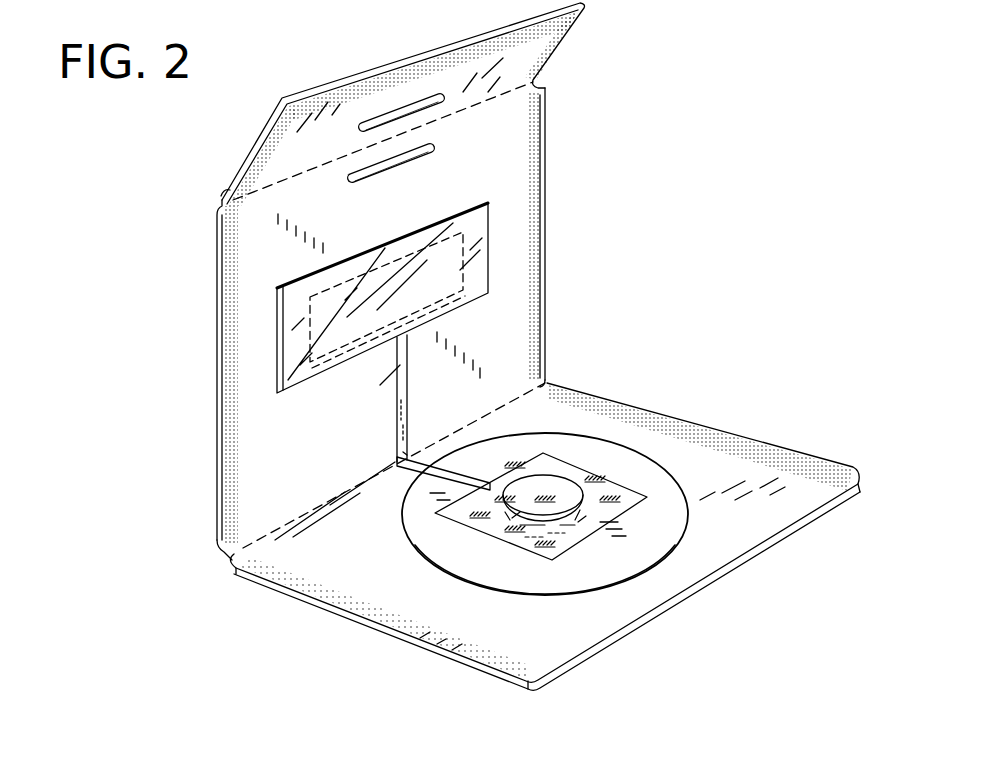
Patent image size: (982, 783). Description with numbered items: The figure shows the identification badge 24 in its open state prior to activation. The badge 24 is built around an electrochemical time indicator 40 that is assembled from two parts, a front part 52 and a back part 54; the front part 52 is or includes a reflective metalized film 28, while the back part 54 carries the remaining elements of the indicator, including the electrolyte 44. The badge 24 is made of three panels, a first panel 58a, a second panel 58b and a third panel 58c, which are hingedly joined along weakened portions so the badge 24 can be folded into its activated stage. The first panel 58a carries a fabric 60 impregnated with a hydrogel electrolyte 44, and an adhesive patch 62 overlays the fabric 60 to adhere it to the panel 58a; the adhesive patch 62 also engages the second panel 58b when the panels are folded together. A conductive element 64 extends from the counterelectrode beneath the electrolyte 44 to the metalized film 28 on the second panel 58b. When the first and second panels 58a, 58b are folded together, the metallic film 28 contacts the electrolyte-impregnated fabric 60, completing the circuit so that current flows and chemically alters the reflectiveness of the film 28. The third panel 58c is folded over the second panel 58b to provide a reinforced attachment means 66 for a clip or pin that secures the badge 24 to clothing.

The identification badge 24 is at (491, 345).
The reflective metalized film 28 is at (475, 230).
The time indicator 40 is at (636, 400).
The electrolyte 44 is at (483, 523).
The front part 52 is at (513, 207).
The back part 54 is at (616, 611).
The first panel 58a is at (545, 502).
The second panel 58b is at (513, 290).
The third panel 58c is at (607, 110).
The fabric 60 is at (480, 513).
The adhesive patch 62 is at (232, 270).
The conductive element 64 is at (400, 413).
The reinforced attachment means 66 is at (667, 512).